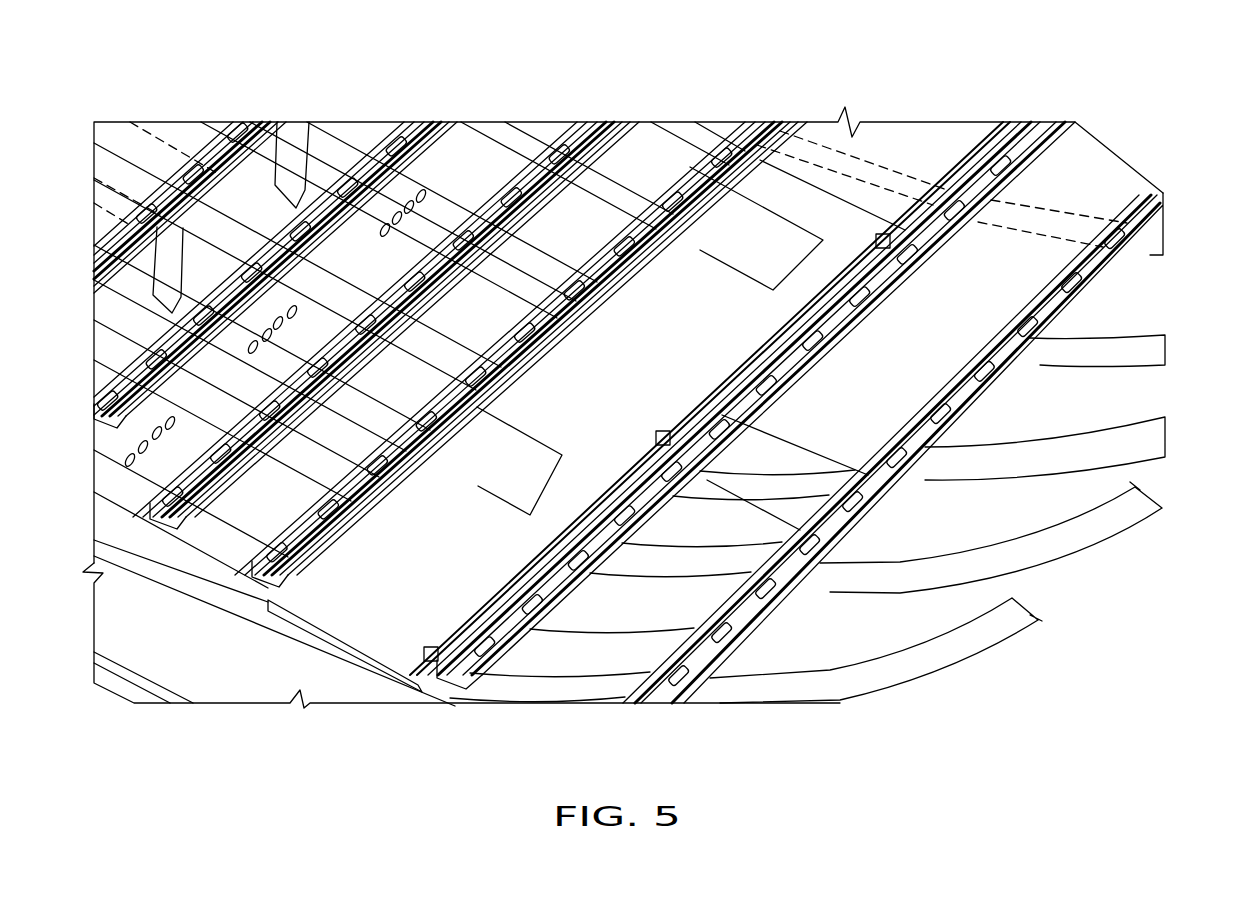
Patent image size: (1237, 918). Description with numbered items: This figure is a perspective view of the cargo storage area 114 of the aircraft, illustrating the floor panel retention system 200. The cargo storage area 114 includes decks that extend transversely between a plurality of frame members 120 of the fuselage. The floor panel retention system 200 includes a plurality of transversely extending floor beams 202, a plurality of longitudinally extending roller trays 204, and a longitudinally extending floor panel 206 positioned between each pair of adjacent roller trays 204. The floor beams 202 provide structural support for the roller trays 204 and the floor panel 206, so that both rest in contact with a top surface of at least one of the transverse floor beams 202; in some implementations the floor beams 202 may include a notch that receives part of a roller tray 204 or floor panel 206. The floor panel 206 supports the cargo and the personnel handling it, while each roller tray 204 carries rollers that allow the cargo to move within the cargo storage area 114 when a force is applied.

The cargo storage area 114 is at (200, 107).
The frame members 120 is at (578, 193).
The floor panel retention system 200 is at (228, 628).
The floor beams 202 is at (552, 253).
The roller trays 204 is at (280, 531).
The floor panel 206 is at (660, 366).